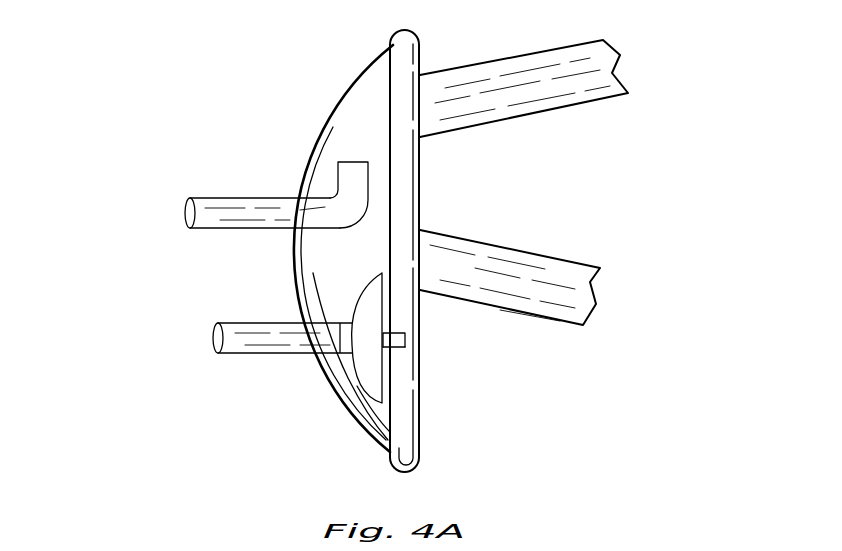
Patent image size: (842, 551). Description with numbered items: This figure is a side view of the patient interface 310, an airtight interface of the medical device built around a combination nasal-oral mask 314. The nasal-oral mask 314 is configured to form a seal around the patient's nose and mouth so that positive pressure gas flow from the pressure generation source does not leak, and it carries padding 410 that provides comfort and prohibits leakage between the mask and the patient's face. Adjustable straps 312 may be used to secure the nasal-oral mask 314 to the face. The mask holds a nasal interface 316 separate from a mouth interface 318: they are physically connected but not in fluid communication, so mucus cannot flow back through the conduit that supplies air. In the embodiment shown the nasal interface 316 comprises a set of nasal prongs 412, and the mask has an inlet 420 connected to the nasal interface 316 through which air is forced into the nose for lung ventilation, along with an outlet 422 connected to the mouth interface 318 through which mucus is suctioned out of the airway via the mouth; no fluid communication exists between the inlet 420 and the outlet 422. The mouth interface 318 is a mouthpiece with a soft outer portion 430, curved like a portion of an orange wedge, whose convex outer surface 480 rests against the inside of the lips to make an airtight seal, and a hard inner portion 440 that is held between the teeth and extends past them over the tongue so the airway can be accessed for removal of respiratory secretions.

The patient interface 310 is at (185, 92).
The adjustable straps 312 is at (573, 103).
The nasal-oral mask 314 is at (367, 88).
The nasal interface 316 is at (330, 175).
The mouth interface 318 is at (347, 367).
The padding 410 is at (420, 55).
The nasal prongs 412 is at (365, 187).
The inlet 420 is at (228, 200).
The outlet 422 is at (253, 330).
The soft outer portion 430 is at (372, 312).
The hard inner portion 440 is at (400, 347).
The outer surface 480 is at (352, 394).